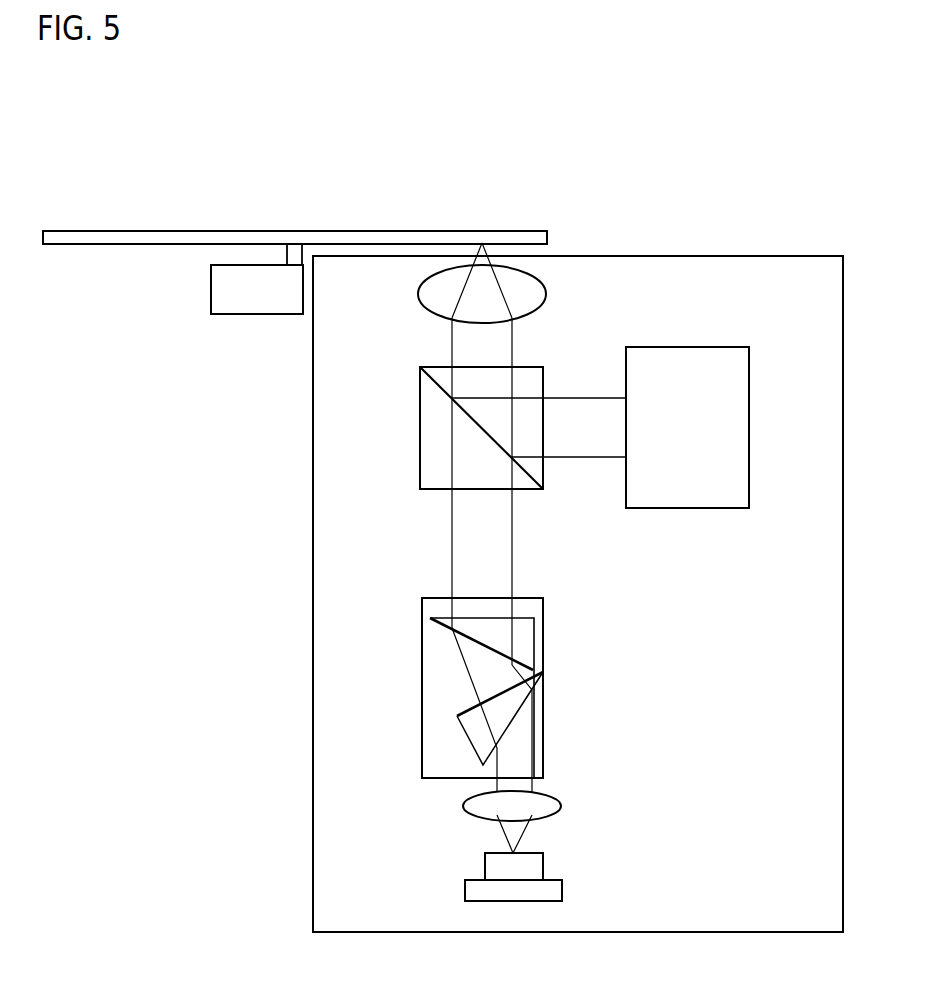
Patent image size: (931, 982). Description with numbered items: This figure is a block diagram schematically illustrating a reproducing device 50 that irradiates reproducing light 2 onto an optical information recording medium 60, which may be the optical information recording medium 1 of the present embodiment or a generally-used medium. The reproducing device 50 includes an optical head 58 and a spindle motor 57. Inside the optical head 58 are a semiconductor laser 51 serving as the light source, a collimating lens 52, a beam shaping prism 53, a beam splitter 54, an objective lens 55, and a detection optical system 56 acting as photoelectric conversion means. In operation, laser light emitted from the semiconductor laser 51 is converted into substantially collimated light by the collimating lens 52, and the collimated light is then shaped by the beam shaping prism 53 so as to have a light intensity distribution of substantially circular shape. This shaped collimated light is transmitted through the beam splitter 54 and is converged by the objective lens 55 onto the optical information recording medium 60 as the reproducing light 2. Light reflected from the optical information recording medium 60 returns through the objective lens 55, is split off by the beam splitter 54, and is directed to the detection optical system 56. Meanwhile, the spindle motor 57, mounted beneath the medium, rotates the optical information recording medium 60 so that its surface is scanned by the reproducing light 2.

The reproducing device 50 is at (199, 151).
The optical information recording medium 1 is at (348, 236).
The optical information recording medium 60 is at (295, 237).
The reproducing light 2 is at (490, 244).
The spindle motor 57 is at (213, 291).
The objective lens 55 is at (420, 292).
The beam splitter 54 is at (427, 441).
The detection optical system 56 is at (688, 353).
The beam shaping prism 53 is at (525, 640).
The collimating lens 52 is at (562, 804).
The semiconductor laser 51 is at (540, 866).
The optical head 58 is at (323, 777).